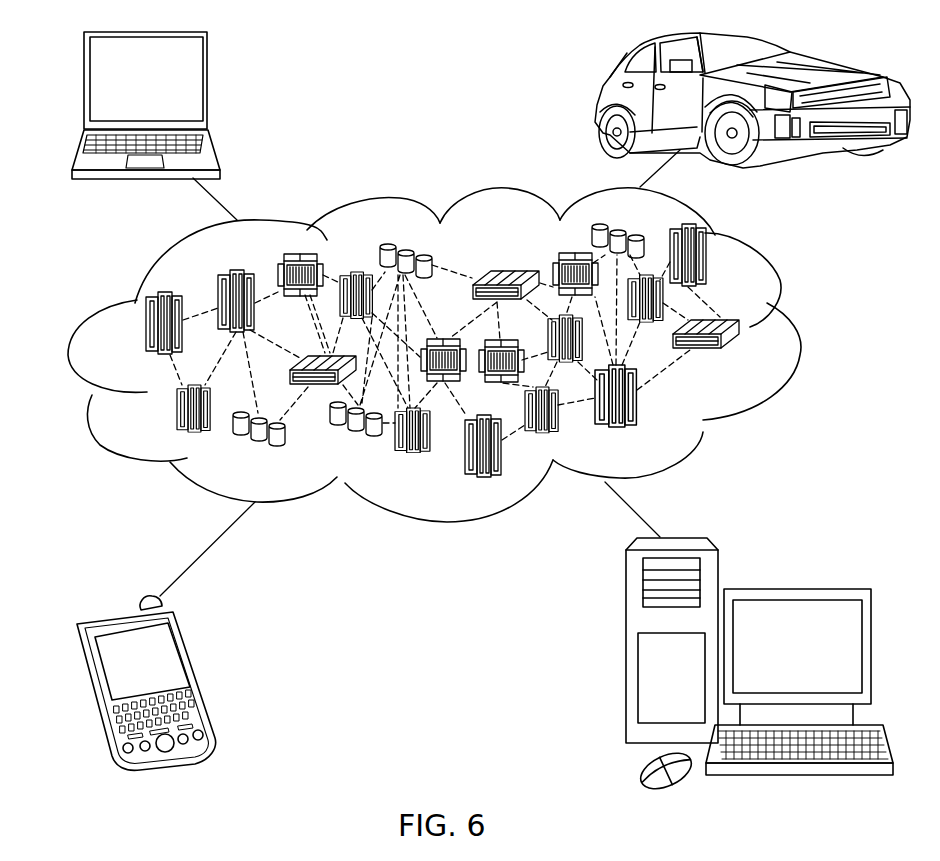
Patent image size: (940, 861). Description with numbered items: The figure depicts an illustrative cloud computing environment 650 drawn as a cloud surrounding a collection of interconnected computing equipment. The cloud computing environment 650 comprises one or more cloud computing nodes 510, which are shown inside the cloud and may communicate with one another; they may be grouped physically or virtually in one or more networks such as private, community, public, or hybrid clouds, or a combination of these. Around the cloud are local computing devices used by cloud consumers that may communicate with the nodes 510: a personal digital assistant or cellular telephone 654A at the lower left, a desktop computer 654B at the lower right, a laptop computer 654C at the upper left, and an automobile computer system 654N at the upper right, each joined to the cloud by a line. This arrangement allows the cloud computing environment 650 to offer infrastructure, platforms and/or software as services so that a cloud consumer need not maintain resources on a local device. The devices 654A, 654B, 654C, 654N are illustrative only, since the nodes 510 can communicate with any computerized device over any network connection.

The cloud computing environment 650 is at (793, 330).
The cloud computing nodes 510 is at (736, 368).
The personal digital assistant or cellular telephone 654A is at (197, 670).
The desktop computer 654B is at (793, 589).
The laptop computer 654C is at (207, 85).
The automobile computer system 654N is at (600, 102).